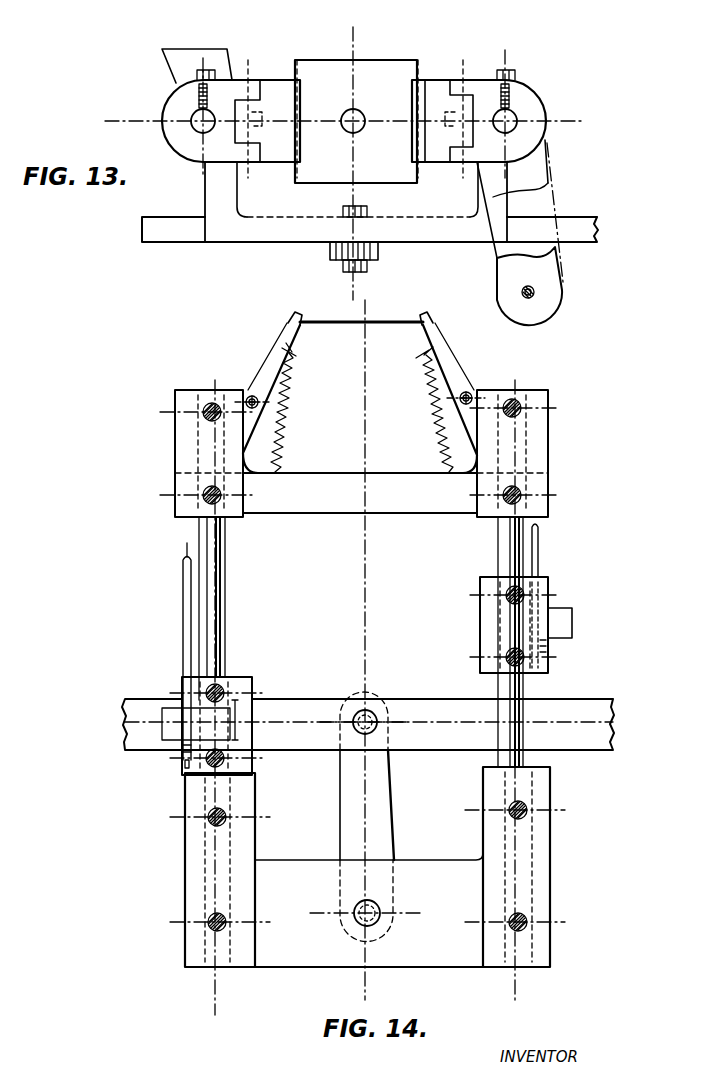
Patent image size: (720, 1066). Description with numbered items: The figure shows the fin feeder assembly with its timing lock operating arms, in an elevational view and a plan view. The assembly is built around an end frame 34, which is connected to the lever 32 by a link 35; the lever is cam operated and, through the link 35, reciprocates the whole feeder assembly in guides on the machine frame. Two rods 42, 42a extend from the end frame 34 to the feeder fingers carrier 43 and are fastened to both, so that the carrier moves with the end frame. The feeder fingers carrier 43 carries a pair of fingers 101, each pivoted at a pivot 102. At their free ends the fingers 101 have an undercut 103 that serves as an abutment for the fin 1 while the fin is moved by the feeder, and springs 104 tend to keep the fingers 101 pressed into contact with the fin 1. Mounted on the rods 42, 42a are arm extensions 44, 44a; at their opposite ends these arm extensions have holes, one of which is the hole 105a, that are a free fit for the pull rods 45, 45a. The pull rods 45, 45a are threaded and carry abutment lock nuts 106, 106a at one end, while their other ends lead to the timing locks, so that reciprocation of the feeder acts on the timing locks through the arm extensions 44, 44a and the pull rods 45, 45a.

In FIG. 13, the fin 1 is at (332, 88).
In FIG. 14, the fin 1 is at (377, 328).
In FIG. 13, the lever 32 is at (567, 232).
In FIG. 14, the lever 32 is at (583, 738).
In FIG. 14, the end frame 34 is at (282, 956).
In FIG. 13, the link 35 is at (380, 248).
In FIG. 14, the link 35 is at (380, 823).
In FIG. 14, the rod 42 is at (224, 600).
In FIG. 14, the rod 42a is at (508, 545).
In FIG. 13, the feeder fingers carrier 43 is at (222, 210).
In FIG. 14, the feeder fingers carrier 43 is at (318, 517).
In FIG. 13, the arm extension 44 is at (192, 58).
In FIG. 14, the arm extension 44 is at (236, 692).
In FIG. 13, the arm extension 44a is at (562, 288).
In FIG. 14, the arm extension 44a is at (496, 628).
In FIG. 14, the pull rod 45 is at (183, 612).
In FIG. 13, the pull rod 45a is at (530, 298).
In FIG. 14, the pull rod 45a is at (540, 548).
In FIG. 14, the finger 101 is at (280, 336).
In FIG. 14, the pivot 102 is at (252, 409).
In FIG. 14, the undercut 103 is at (290, 320).
In FIG. 14, the spring 104 is at (283, 438).
In FIG. 13, the hole 105a is at (533, 296).
In FIG. 14, the abutment lock nut 106 is at (184, 758).
In FIG. 14, the abutment lock nut 106a is at (548, 643).